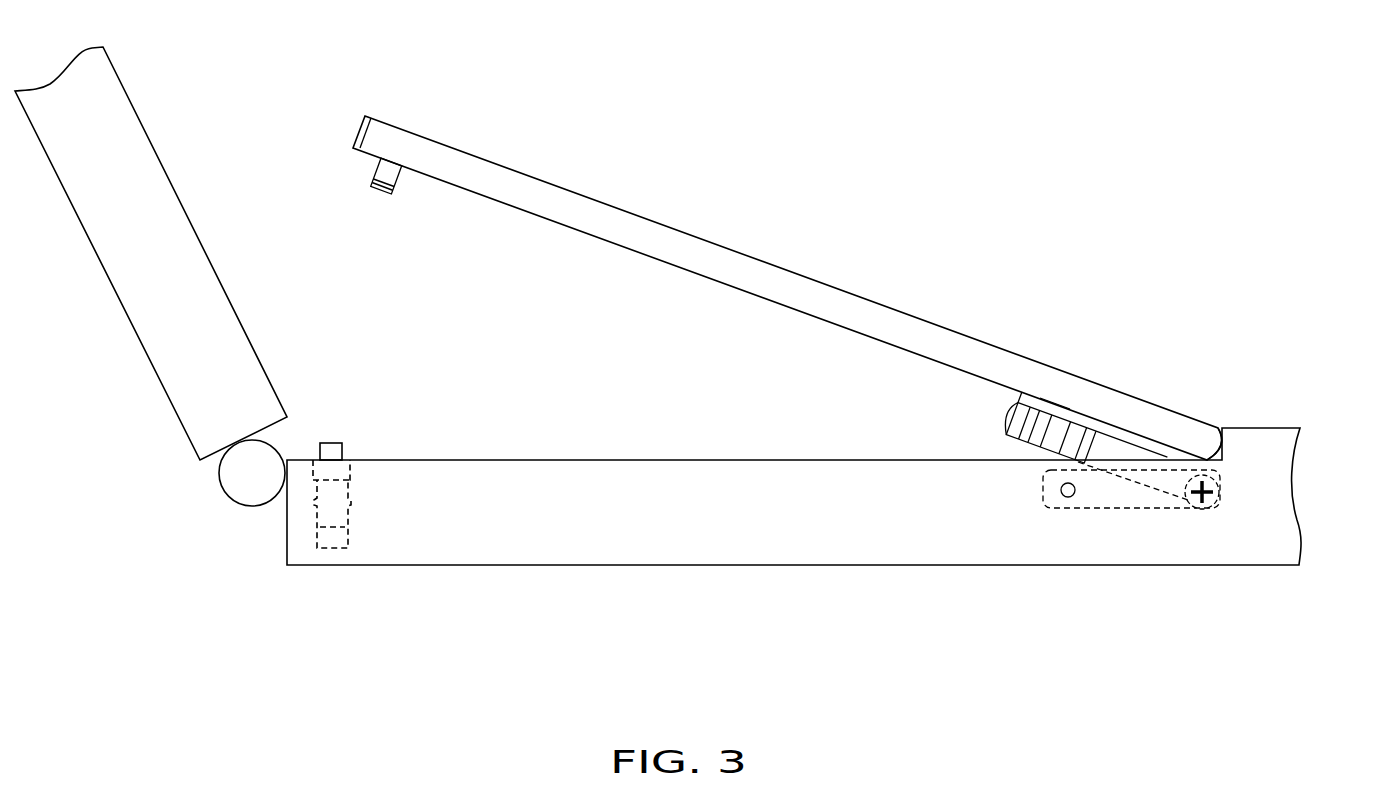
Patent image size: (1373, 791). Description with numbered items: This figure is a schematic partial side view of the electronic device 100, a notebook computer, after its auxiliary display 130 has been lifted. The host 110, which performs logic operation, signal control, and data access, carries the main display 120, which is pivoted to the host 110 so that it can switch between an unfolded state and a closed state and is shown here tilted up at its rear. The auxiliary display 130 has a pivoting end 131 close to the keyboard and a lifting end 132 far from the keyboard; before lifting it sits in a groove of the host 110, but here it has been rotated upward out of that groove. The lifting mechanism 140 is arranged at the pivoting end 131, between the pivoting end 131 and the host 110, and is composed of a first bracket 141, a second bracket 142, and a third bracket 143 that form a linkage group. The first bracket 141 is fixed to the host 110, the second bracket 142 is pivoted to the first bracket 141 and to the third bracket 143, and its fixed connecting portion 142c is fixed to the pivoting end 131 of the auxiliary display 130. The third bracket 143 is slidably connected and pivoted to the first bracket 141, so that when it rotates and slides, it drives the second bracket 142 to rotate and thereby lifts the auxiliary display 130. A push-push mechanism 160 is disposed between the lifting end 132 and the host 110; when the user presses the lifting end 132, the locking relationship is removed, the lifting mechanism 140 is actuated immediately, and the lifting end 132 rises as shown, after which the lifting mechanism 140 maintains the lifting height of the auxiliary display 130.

The electronic device 100 is at (1360, 686).
The host 110 is at (858, 535).
The main display 120 is at (133, 213).
The auxiliary display 130 is at (725, 268).
The pivoting end 131 is at (1197, 438).
The lifting end 132 is at (398, 150).
The lifting mechanism 140 is at (1104, 434).
The first bracket 141 is at (1108, 490).
The second bracket 142 is at (1132, 355).
The fixed connecting portion 142c is at (1055, 420).
The third bracket 143 is at (1112, 367).
The push-push mechanism 160 is at (334, 442).